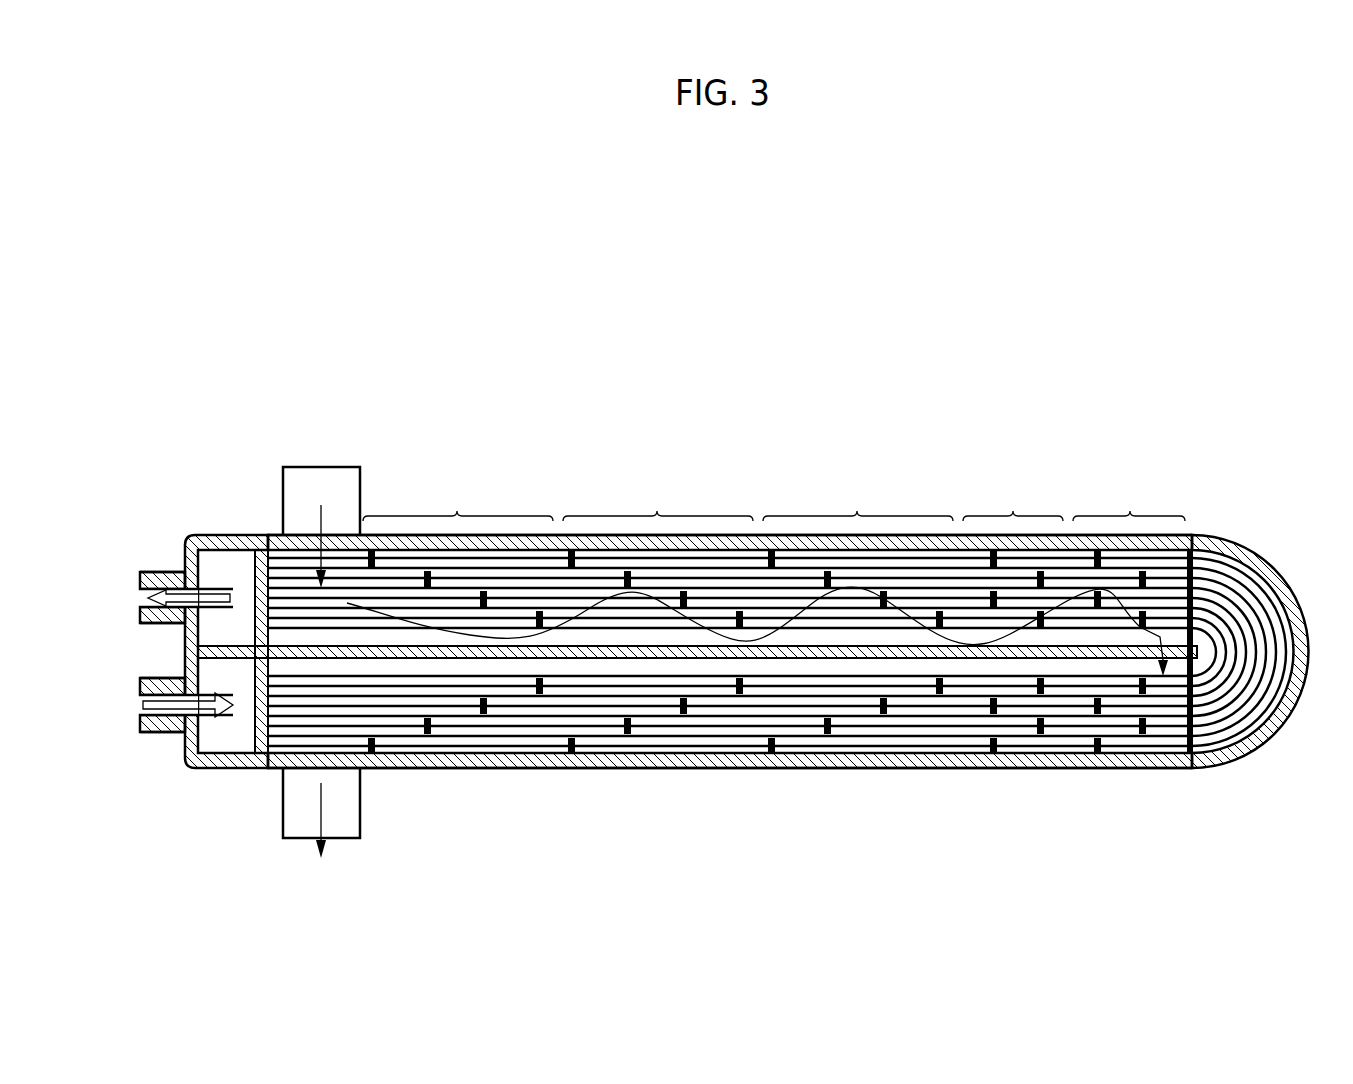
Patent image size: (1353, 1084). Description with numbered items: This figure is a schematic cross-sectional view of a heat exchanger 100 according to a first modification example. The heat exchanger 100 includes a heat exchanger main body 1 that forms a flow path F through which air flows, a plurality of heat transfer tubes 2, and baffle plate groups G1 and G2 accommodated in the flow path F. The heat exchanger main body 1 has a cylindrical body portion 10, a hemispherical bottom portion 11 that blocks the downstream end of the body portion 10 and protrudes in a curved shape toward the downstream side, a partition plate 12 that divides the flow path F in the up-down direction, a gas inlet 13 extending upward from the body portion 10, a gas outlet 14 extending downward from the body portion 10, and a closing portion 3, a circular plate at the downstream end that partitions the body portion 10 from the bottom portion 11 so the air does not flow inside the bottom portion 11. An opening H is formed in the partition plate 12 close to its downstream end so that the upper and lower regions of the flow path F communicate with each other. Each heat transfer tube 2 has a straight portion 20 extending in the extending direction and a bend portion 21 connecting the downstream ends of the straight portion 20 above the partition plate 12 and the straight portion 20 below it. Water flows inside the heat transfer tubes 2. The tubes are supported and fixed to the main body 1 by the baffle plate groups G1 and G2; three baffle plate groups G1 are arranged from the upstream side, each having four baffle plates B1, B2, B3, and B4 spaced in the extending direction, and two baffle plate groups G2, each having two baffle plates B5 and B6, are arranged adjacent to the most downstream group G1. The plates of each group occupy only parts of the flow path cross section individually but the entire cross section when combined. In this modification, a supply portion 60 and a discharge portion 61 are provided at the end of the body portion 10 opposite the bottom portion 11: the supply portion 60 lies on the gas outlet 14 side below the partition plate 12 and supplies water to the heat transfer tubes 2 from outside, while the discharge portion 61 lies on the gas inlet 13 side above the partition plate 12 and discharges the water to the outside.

The heat exchanger 100 is at (417, 250).
The heat exchanger main body 1 is at (729, 795).
The body portion 10 is at (833, 763).
The bottom portion 11 is at (1228, 548).
The partition plate 12 is at (643, 652).
The gas inlet 13 is at (300, 480).
The gas outlet 14 is at (305, 817).
The heat transfer tube 2 is at (918, 754).
The straight portion 20 is at (972, 737).
The bend portion 21 is at (1253, 735).
The closing portion 3 is at (1186, 748).
The supply portion 60 is at (182, 747).
The discharge portion 61 is at (183, 556).
The flow path F is at (265, 664).
The opening H is at (1177, 637).
The baffle plate B1 is at (374, 565).
The baffle plate B2 is at (428, 587).
The baffle plate B3 is at (479, 600).
The baffle plate B4 is at (539, 620).
The baffle plate B5 is at (1095, 608).
The baffle plate B6 is at (1145, 624).
The baffle plate group G1 is at (658, 498).
The baffle plate group G2 is at (1074, 498).